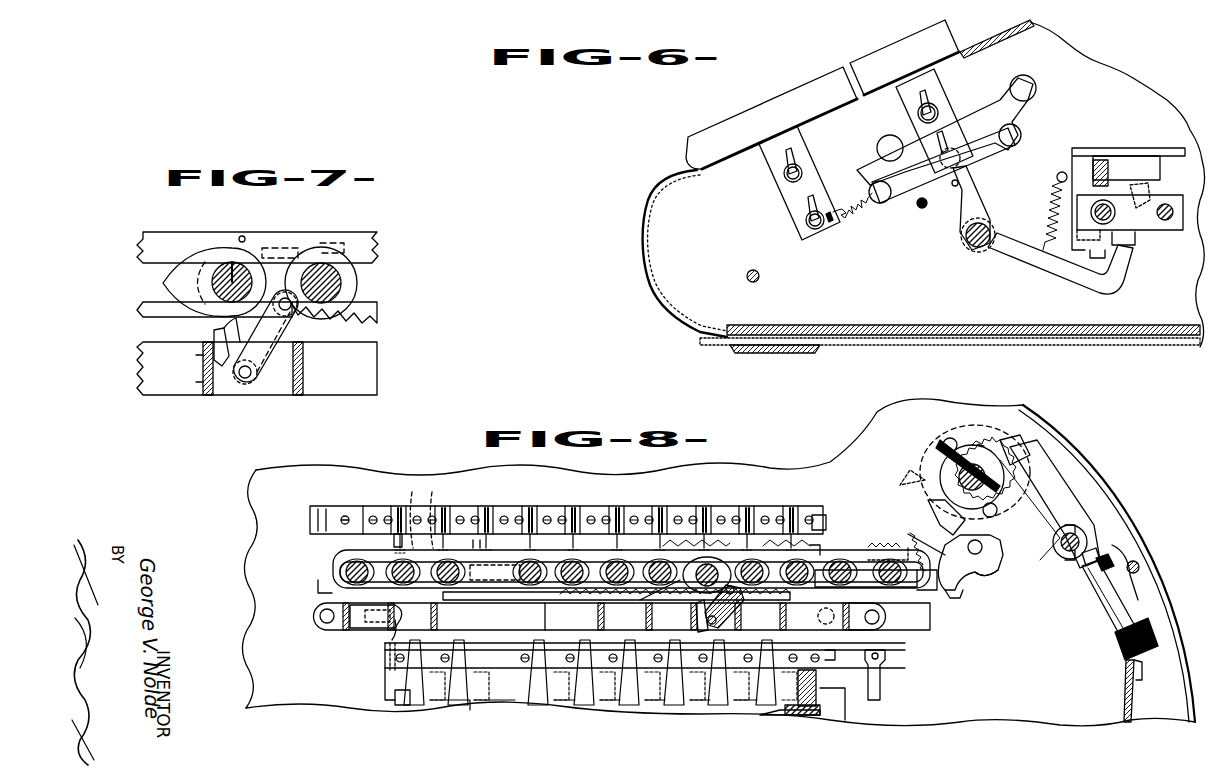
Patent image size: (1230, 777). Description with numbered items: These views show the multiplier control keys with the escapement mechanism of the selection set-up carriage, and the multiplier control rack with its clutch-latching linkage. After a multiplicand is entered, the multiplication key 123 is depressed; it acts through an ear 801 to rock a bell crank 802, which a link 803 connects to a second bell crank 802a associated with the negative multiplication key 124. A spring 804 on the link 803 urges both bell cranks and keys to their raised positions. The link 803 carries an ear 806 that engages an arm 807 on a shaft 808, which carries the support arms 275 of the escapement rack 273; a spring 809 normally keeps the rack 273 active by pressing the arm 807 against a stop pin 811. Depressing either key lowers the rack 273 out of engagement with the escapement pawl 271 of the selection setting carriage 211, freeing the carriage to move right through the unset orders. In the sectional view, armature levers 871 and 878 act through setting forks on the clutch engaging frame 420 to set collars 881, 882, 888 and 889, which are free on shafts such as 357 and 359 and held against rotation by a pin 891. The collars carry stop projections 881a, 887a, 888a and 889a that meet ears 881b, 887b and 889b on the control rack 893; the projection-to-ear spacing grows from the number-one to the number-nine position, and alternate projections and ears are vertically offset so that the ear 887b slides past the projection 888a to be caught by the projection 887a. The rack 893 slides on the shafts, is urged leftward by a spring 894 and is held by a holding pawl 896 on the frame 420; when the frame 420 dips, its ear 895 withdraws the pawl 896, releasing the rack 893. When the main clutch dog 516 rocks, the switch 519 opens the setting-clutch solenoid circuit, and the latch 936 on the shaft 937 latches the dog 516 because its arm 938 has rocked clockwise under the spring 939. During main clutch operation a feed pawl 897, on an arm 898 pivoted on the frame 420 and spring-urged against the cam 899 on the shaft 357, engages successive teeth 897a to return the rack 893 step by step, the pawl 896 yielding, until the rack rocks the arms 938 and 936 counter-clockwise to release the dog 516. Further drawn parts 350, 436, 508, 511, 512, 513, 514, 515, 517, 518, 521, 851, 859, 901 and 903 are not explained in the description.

In FIG. 6, the multiplication key 123 is at (712, 122).
In FIG. 6, the negative multiplication key 124 is at (858, 62).
In FIG. 6, the selection setting carriage 211 is at (1178, 232).
In FIG. 6, the escapement pawl 271 is at (1152, 188).
In FIG. 6, the escapement rack 273 is at (1130, 250).
In FIG. 6, the support arms 275 is at (1035, 284).
In FIG. 8, the carriage frame member 350 is at (345, 570).
In FIG. 7, the shaft 357 is at (232, 262).
In FIG. 8, the shaft 357 is at (705, 565).
In FIG. 8, the shaft 359 is at (818, 618).
In FIG. 7, the clutch engaging frame 420 is at (350, 375).
In FIG. 8, the clutch engaging frame 420 is at (385, 625).
In FIG. 8, the key stem guide 436 is at (398, 512).
In FIG. 8, the pivot stud 508 is at (1088, 544).
In FIG. 8, the pawl 511 is at (1010, 442).
In FIG. 8, the ratchet gear 512 is at (945, 470).
In FIG. 8, the pawl arm 513 is at (960, 440).
In FIG. 8, the ratchet housing outline 514 is at (938, 440).
In FIG. 8, the machine casing 515 is at (1047, 442).
In FIG. 8, the main clutch dog 516 is at (1068, 510).
In FIG. 8, the link connection 517 is at (1080, 566).
In FIG. 8, the switch contact 518 is at (1160, 590).
In FIG. 8, the switch 519 is at (1100, 606).
In FIG. 8, the gear hub shaft 521 is at (958, 476).
In FIG. 6, the ear 801 is at (802, 170).
In FIG. 6, the bell crank 802 is at (866, 148).
In FIG. 6, the bell crank 802a is at (1030, 110).
In FIG. 6, the link 803 is at (902, 207).
In FIG. 6, the spring 804 is at (838, 226).
In FIG. 6, the ear 806 is at (946, 184).
In FIG. 6, the arm 807 is at (980, 196).
In FIG. 6, the shaft 808 is at (970, 248).
In FIG. 6, the spring 809 is at (1050, 205).
In FIG. 6, the stop pin 811 is at (968, 178).
In FIG. 8, the frame bracket 851 is at (405, 698).
In FIG. 8, the frame block 859 is at (820, 712).
In FIG. 8, the armature lever 871 is at (395, 694).
In FIG. 8, the armature lever 878 is at (760, 712).
In FIG. 8, the settable collar 881 is at (400, 550).
In FIG. 8, the stop projection 881a is at (394, 508).
In FIG. 8, the ear 881b is at (443, 508).
In FIG. 8, the settable collar 882 is at (458, 562).
In FIG. 8, the stop projection 887a is at (720, 540).
In FIG. 8, the ear 887b is at (763, 613).
In FIG. 7, the settable collar 888 is at (357, 282).
In FIG. 8, the stop projection 888a is at (766, 540).
In FIG. 8, the settable collar 889 is at (860, 603).
In FIG. 8, the stop projection 889a is at (839, 541).
In FIG. 8, the ear 889b is at (876, 569).
In FIG. 7, the pin 891 is at (322, 246).
In FIG. 8, the pin 891 is at (622, 616).
In FIG. 7, the multiplier control rack 893 is at (156, 244).
In FIG. 8, the multiplier control rack 893 is at (334, 564).
In FIG. 8, the spring 894 is at (862, 508).
In FIG. 8, the ear 895 is at (545, 602).
In FIG. 8, the holding pawl 896 is at (573, 616).
In FIG. 7, the feed pawl 897 is at (218, 338).
In FIG. 8, the feed pawl 897 is at (695, 617).
In FIG. 7, the teeth 897a is at (345, 325).
In FIG. 7, the arm 898 is at (270, 333).
In FIG. 8, the arm 898 is at (720, 632).
In FIG. 7, the cam 899 is at (163, 283).
In FIG. 8, the cam 899 is at (645, 603).
In FIG. 8, the frame post 901 is at (385, 647).
In FIG. 8, the finger 903 is at (884, 688).
In FIG. 8, the latch 936 is at (990, 576).
In FIG. 8, the shaft 937 is at (984, 547).
In FIG. 8, the arm 938 is at (950, 598).
In FIG. 8, the spring 939 is at (910, 533).